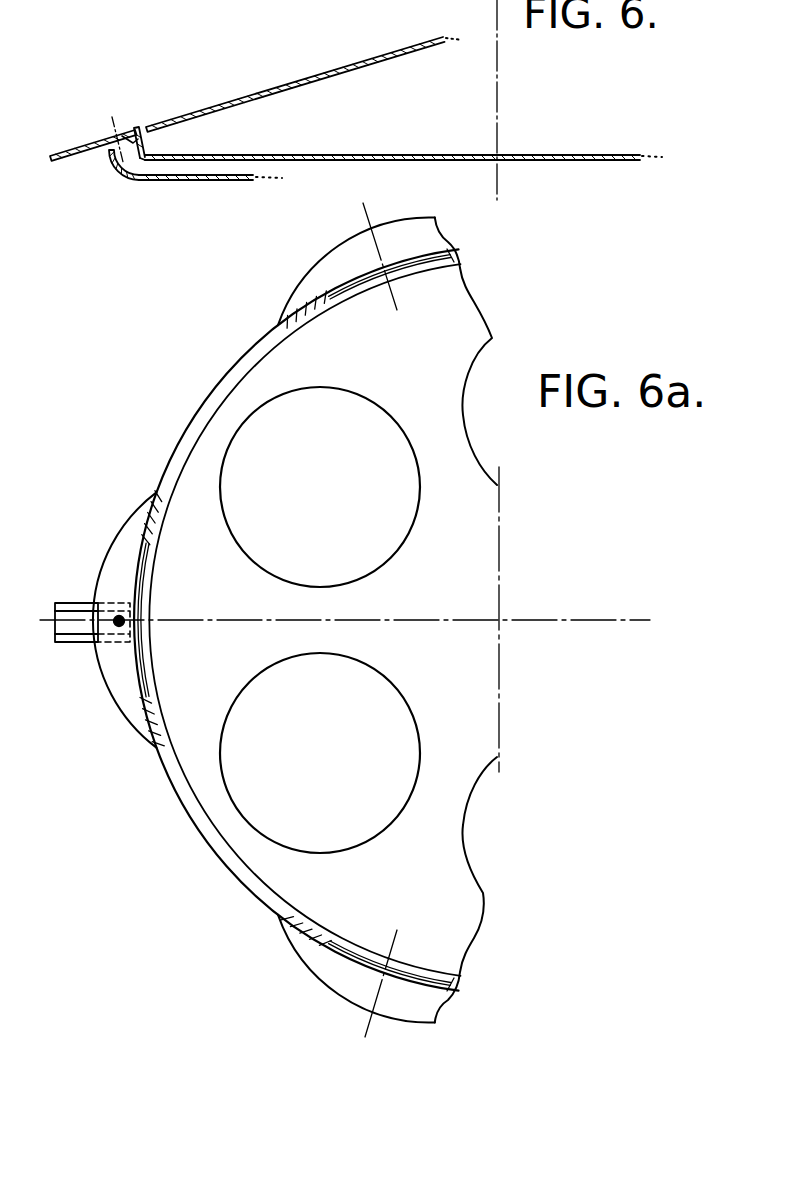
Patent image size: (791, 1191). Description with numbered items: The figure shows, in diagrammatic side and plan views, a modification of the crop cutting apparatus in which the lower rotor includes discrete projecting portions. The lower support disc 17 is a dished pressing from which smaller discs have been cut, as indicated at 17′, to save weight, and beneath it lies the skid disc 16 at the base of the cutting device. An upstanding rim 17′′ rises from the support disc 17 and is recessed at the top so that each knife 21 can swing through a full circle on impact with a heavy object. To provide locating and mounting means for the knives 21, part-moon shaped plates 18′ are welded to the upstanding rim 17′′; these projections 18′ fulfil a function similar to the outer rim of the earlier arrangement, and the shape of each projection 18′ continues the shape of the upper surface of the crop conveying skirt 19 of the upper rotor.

In FIG. 6, the skid disc 16 is at (145, 178).
In FIG. 6, the lower support disc 17 is at (290, 155).
In FIG. 6A, the lower support disc 17 is at (466, 590).
In FIG. 6A, the cut-out discs 17′ is at (470, 516).
In FIG. 6, the upstanding rim 17′′ is at (145, 148).
In FIG. 6A, the upstanding rim 17′′ is at (152, 515).
In FIG. 6, the part-moon shaped plate 18′ is at (121, 138).
In FIG. 6A, the part-moon shaped plate 18′ is at (330, 272).
In FIG. 6, the crop conveying skirt 19 is at (392, 55).
In FIG. 6, the knife 21 is at (73, 150).
In FIG. 6A, the knife 21 is at (66, 565).